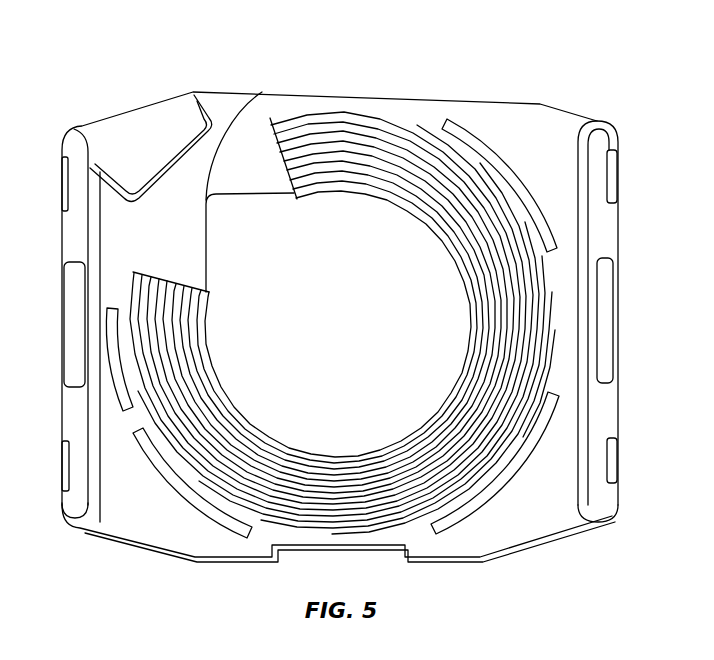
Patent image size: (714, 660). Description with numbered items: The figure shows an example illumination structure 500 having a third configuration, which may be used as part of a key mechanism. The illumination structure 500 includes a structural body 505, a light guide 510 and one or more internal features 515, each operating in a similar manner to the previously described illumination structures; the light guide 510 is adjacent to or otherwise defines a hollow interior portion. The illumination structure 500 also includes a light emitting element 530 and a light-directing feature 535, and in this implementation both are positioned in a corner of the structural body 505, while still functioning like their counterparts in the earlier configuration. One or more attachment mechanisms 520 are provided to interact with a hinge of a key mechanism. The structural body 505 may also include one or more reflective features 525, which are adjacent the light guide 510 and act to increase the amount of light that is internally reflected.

The illumination structure 500 is at (60, 72).
The structural body 505 is at (553, 105).
The light guide 510 is at (338, 109).
The internal features 515 is at (412, 130).
The attachment mechanisms 520 is at (612, 324).
The reflective features 525 is at (480, 125).
The light emitting element 530 is at (157, 103).
The light-directing feature 535 is at (262, 91).